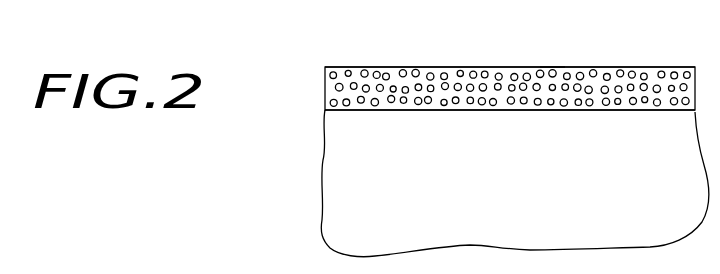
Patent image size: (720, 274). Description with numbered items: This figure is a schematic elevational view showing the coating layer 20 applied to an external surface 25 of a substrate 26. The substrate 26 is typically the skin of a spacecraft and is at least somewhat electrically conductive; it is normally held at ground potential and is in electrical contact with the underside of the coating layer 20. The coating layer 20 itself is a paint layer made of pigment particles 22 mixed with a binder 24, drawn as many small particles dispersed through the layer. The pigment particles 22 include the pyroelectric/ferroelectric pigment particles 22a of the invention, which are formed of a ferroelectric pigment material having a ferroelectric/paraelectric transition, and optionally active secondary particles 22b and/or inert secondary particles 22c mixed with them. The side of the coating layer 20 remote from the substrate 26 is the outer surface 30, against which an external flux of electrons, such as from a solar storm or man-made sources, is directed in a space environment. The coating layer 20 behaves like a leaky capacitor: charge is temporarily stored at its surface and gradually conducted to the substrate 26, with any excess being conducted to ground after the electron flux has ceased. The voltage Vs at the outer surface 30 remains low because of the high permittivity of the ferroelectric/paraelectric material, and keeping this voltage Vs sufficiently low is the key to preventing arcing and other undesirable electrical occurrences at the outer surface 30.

The coating layer 20 is at (325, 100).
The pigment particles 22 is at (386, 75).
The pyroelectric/ferroelectric pigment particles 22a is at (633, 104).
The active secondary particles 22b is at (493, 105).
The inert secondary particles 22c is at (427, 103).
The binder 24 is at (455, 72).
The external surface 25 is at (347, 110).
The substrate 26 is at (328, 168).
The outer surface 30 is at (667, 69).
The surface voltage Vs is at (550, 67).